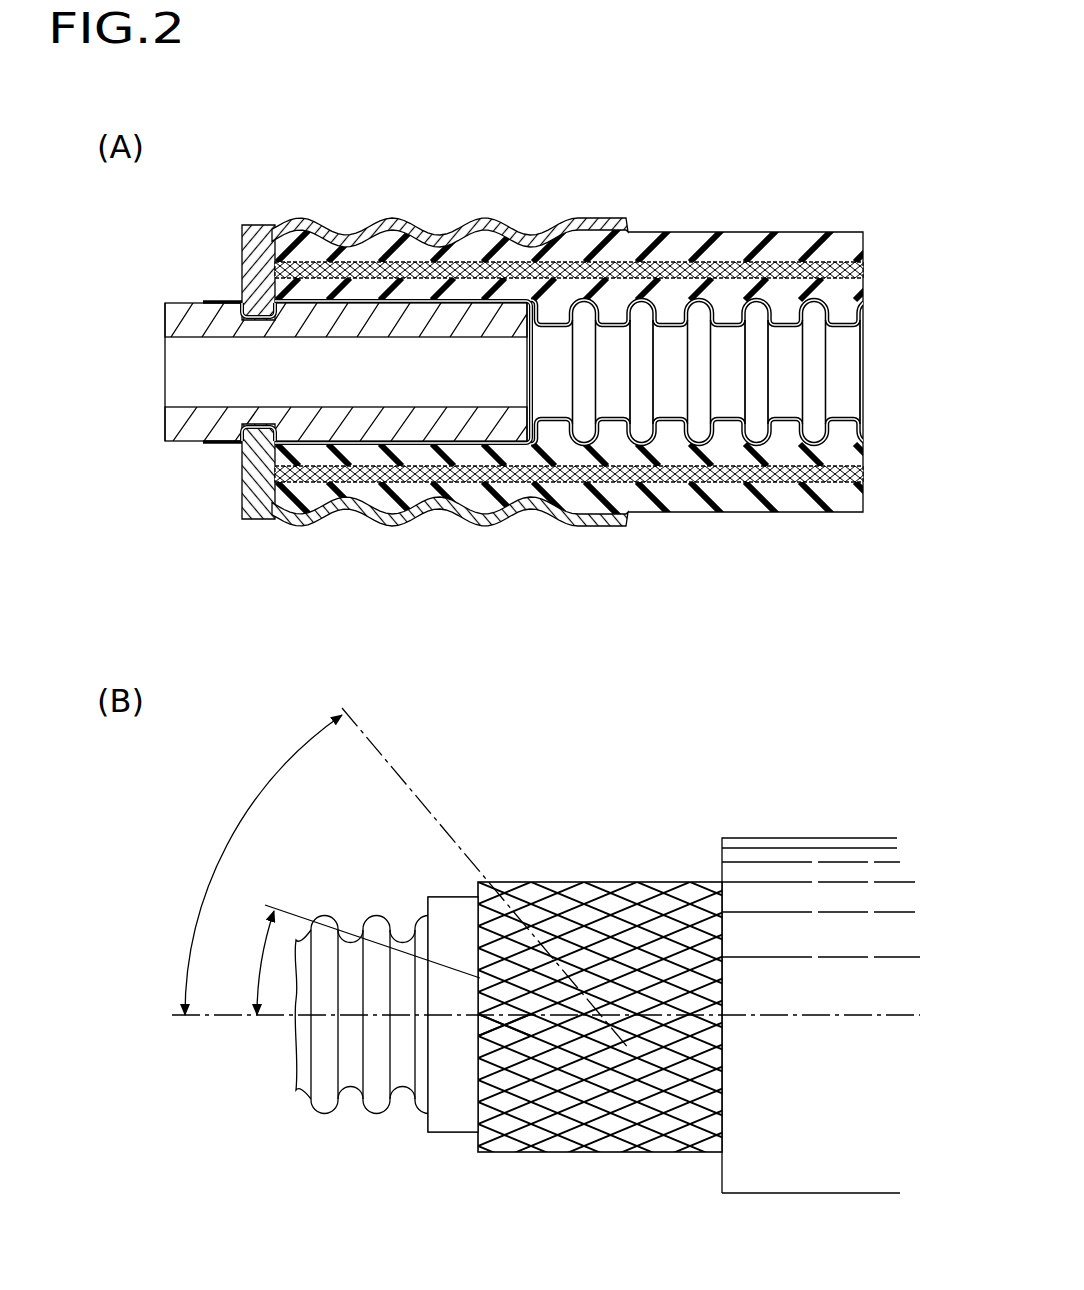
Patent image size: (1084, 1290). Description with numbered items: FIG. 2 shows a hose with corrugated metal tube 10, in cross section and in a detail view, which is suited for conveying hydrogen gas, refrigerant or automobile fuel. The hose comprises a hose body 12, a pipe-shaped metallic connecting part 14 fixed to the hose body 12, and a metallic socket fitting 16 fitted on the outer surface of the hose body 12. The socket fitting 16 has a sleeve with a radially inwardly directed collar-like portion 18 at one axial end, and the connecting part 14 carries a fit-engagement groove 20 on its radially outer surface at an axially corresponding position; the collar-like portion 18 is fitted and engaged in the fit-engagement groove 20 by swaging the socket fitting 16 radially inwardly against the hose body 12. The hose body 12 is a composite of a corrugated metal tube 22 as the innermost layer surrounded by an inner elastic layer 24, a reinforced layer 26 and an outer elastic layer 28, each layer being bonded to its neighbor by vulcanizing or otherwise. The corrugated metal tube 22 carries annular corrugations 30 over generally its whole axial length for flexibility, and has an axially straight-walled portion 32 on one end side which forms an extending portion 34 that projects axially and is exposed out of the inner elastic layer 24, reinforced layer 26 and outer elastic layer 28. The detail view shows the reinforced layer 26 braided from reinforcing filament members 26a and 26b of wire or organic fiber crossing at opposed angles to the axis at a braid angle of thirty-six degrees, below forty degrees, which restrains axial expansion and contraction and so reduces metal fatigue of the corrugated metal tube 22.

The hose with corrugated metal tube 10 is at (740, 165).
The hose body 12 is at (639, 230).
The pipe-shaped metallic connecting part 14 is at (183, 300).
The metallic socket fitting 16 is at (412, 216).
The collar-like portion 18 is at (242, 277).
The fit-engagement groove 20 is at (262, 316).
The corrugated metal tube 22 is at (788, 332).
The inner elastic layer 24 is at (846, 320).
The reinforced layer 26 is at (848, 258).
The reinforcing filament member 26a is at (561, 1128).
The reinforcing filament member 26b is at (673, 1098).
The outer elastic layer 28 is at (826, 231).
The corrugations 30 is at (598, 332).
The straight-walled portion 32 is at (411, 308).
The extending portion 34 is at (222, 306).